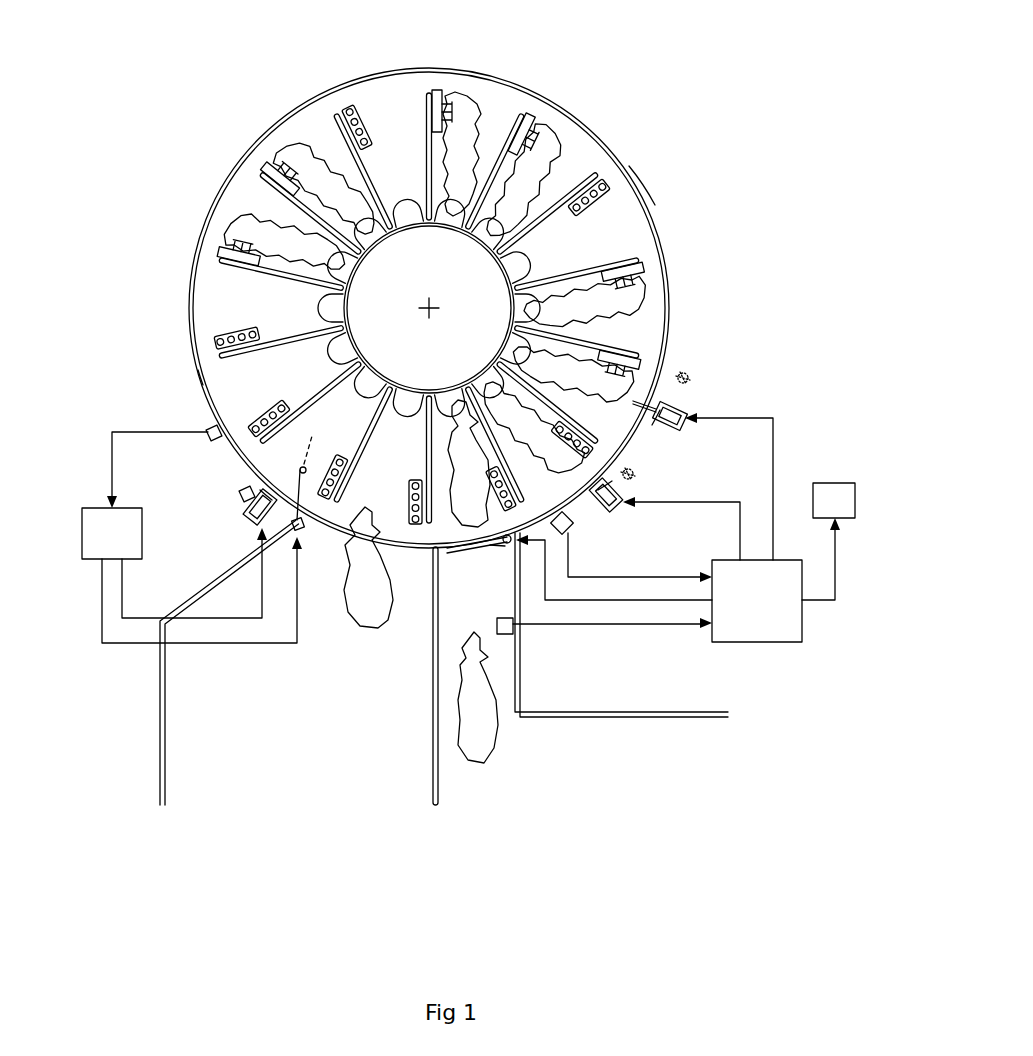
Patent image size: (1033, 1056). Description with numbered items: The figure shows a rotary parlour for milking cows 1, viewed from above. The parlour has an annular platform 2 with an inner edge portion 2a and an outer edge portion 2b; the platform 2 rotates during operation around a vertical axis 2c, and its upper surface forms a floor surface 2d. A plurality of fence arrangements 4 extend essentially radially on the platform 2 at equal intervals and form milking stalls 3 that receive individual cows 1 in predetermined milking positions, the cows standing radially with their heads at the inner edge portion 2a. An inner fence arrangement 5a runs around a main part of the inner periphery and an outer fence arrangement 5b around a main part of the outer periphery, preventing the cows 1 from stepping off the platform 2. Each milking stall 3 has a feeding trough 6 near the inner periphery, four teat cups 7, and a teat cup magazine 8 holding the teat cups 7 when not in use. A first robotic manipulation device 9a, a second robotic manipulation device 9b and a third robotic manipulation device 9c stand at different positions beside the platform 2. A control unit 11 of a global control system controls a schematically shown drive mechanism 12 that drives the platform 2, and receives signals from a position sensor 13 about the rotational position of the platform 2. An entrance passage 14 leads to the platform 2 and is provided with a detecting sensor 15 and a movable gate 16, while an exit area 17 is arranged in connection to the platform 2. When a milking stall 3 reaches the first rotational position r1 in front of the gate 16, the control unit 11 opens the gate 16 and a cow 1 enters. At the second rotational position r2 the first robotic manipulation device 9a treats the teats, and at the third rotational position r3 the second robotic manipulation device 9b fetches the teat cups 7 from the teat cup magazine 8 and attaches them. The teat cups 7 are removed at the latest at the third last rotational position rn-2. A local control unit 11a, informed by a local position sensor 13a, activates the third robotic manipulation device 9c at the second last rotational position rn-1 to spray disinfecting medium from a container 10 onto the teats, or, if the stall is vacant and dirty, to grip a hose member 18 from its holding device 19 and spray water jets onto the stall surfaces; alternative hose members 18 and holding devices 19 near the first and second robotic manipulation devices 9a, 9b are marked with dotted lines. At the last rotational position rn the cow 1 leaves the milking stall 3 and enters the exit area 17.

The cow 1 is at (302, 152).
The annular platform 2 is at (583, 155).
The inner edge portion 2a is at (478, 383).
The outer edge portion 2b is at (672, 325).
The vertical axis 2c is at (425, 300).
The floor surface 2d is at (498, 115).
The milking stall 3 is at (270, 203).
The fence arrangement 4 is at (228, 262).
The inner fence arrangement 5a is at (362, 363).
The outer fence arrangement 5b is at (645, 199).
The feeding trough 6 is at (513, 276).
The teat cup 7 is at (358, 143).
The teat cup magazine 8 is at (345, 120).
The first robotic manipulation device 9a is at (625, 504).
The second robotic manipulation device 9b is at (685, 424).
The third robotic manipulation device 9c is at (262, 517).
The container 10 is at (240, 495).
The control unit 11 is at (753, 625).
The local control unit 11a is at (108, 540).
The drive mechanism 12 is at (834, 497).
The position sensor 13 is at (573, 528).
The local position sensor 13a is at (208, 430).
The entrance passage 14 is at (496, 660).
The detecting sensor 15 is at (513, 628).
The movable gate 16 is at (468, 550).
The exit area 17 is at (387, 703).
The hose member 18 is at (693, 378).
The holding device 19 is at (690, 381).
The first rotational position r1 is at (497, 513).
The second rotational position r2 is at (538, 490).
The third rotational position r3 is at (603, 425).
The last rotational position rn is at (404, 528).
The second last rotational position rn-1 is at (273, 460).
The third last rotational position rn-2 is at (220, 370).